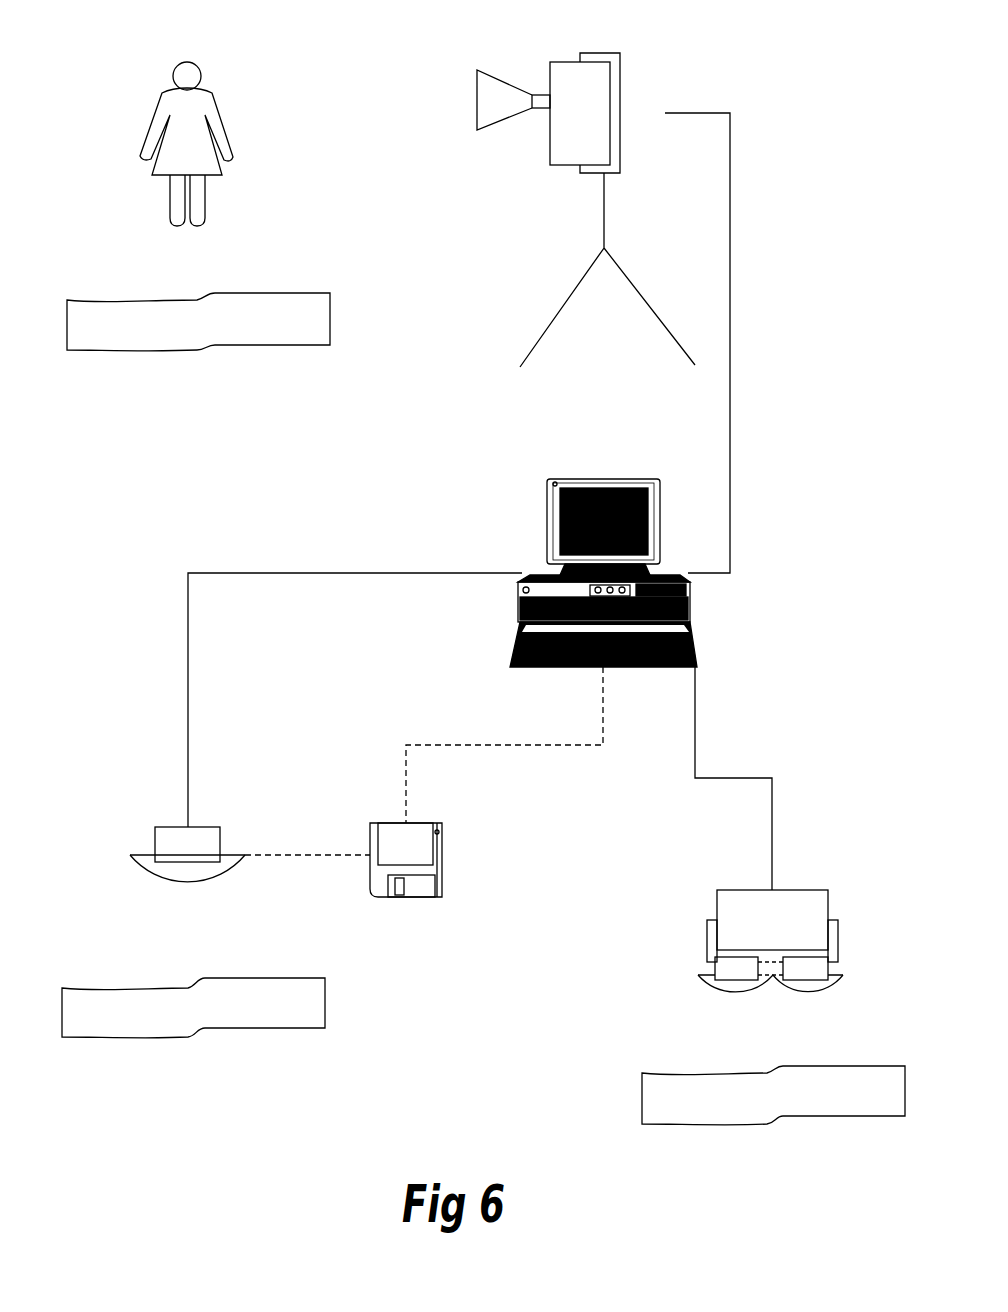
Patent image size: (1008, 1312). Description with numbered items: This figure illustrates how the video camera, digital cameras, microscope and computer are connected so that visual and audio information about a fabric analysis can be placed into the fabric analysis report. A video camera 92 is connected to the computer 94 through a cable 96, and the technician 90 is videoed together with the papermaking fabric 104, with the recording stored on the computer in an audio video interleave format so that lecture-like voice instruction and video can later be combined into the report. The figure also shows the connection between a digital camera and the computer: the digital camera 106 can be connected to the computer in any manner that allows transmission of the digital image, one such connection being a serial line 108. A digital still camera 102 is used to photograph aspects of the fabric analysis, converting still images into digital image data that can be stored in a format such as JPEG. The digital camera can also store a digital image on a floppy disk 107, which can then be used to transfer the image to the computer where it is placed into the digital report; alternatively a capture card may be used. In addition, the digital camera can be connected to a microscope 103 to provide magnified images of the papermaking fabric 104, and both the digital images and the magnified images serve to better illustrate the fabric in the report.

The technician 90 is at (186, 113).
The video camera 92 is at (586, 184).
The computer 94 is at (589, 658).
The cable 96 is at (716, 343).
The digital still camera 102 is at (741, 926).
The microscope 103 is at (744, 974).
The papermaking fabric 104 is at (483, 709).
The digital camera 106 is at (228, 854).
The floppy disk 107 is at (433, 860).
The serial line 108 is at (355, 679).